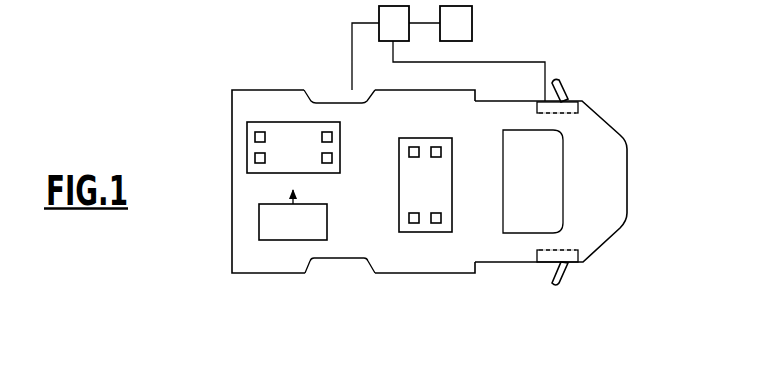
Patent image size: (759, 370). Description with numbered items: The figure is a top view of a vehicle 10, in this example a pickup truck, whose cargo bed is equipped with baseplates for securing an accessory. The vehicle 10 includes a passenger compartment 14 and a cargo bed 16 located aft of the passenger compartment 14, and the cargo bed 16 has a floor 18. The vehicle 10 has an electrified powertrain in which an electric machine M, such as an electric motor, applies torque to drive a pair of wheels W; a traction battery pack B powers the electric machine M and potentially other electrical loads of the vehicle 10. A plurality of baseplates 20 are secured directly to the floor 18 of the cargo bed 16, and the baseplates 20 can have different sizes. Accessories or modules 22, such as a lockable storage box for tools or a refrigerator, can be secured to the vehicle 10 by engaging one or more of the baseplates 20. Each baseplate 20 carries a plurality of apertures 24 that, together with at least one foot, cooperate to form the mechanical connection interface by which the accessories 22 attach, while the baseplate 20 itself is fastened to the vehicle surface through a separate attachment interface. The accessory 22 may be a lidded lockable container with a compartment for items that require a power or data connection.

The vehicle 10 is at (457, 169).
The passenger compartment 14 is at (528, 243).
The cargo bed 16 is at (266, 256).
The floor 18 is at (257, 110).
The baseplate 20 is at (252, 130).
The accessory/module 22 is at (268, 222).
The aperture 24 is at (255, 158).
The wheels W is at (325, 97).
The electric machine M is at (394, 23).
The traction battery pack B is at (456, 23).